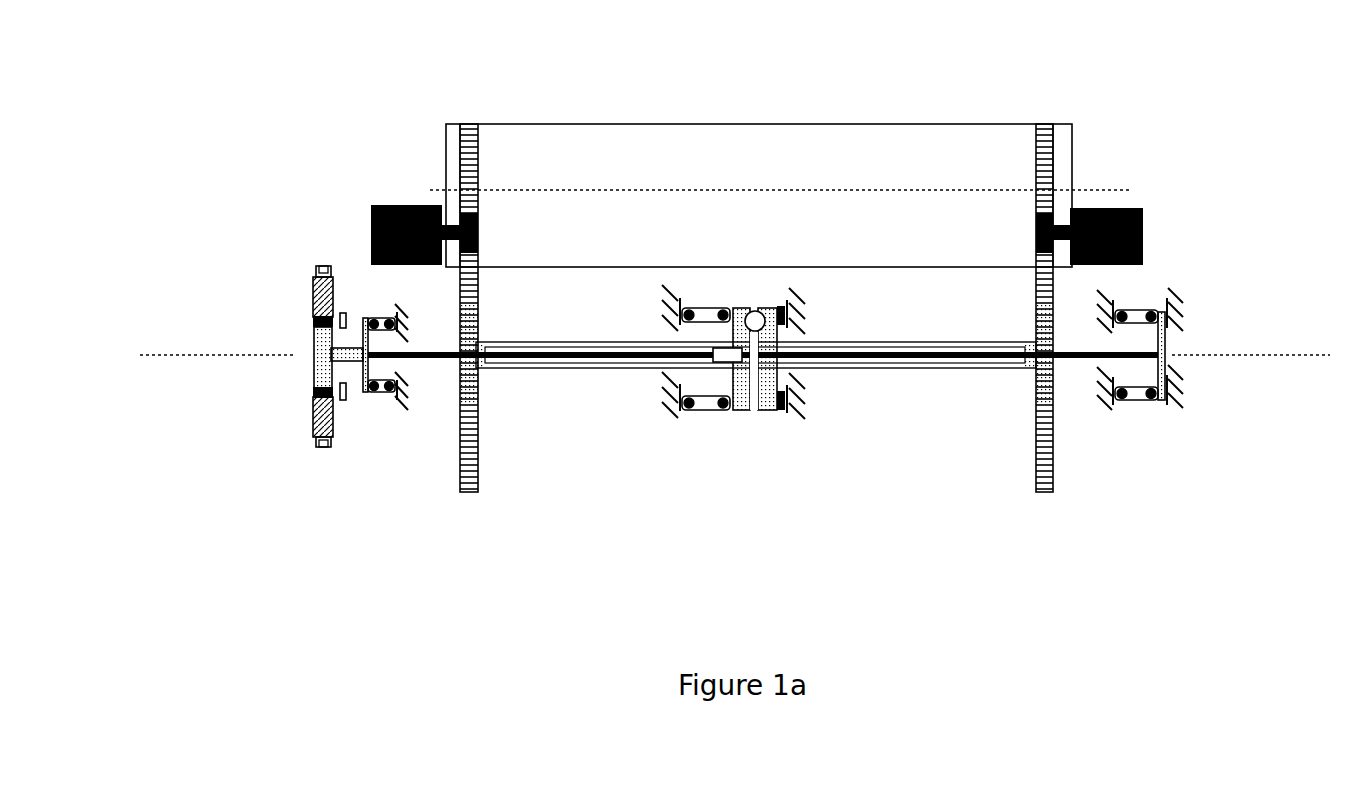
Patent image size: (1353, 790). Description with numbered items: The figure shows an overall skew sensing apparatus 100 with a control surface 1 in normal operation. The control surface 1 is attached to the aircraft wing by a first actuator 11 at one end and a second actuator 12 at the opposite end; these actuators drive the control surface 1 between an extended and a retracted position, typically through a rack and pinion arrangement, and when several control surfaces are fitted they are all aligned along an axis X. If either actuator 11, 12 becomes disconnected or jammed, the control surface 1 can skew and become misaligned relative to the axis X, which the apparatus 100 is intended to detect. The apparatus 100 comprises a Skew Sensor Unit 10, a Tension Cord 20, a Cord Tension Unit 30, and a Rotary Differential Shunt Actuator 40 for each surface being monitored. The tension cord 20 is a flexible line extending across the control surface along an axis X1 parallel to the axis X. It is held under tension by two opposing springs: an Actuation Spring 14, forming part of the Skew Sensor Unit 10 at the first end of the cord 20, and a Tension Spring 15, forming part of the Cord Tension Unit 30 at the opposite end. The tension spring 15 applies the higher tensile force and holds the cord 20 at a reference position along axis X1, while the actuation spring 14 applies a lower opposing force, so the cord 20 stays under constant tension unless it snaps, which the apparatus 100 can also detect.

The control surface 1 is at (571, 121).
The Skew Sensor Unit 10 is at (305, 318).
The first actuator 11 is at (388, 208).
The second actuator 12 is at (1143, 233).
The Actuation Spring 14 is at (378, 393).
The Tension Spring 15 is at (1135, 307).
The Tension Cord 20 is at (410, 358).
The Cord Tension Unit 30 is at (1147, 415).
The Rotary Differential Shunt Actuator 40 is at (765, 425).
The skew sensing apparatus 100 is at (181, 543).
The axis X is at (770, 192).
The axis X1 is at (719, 353).